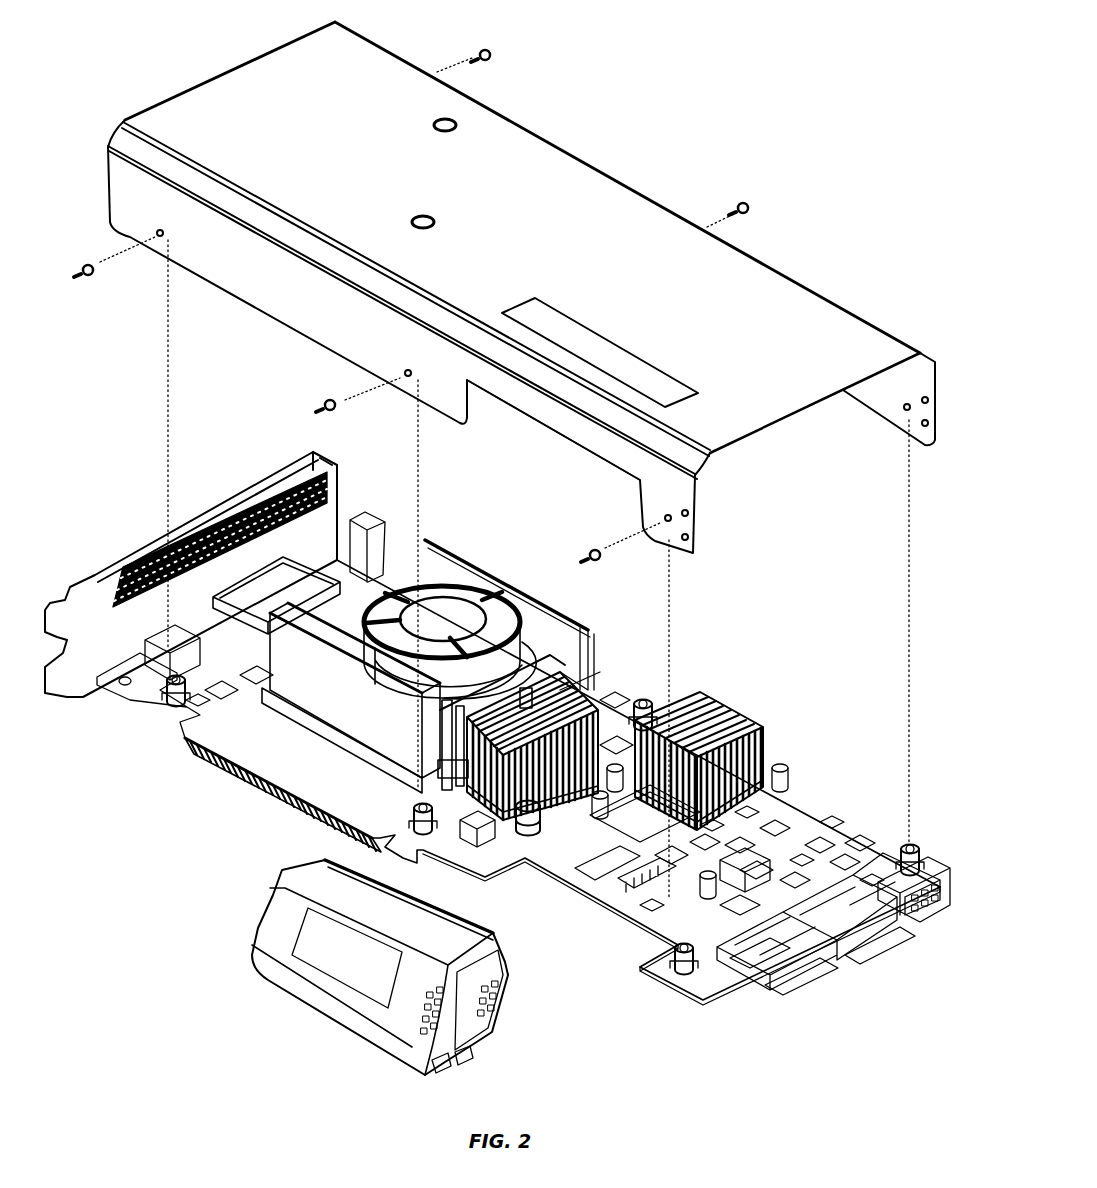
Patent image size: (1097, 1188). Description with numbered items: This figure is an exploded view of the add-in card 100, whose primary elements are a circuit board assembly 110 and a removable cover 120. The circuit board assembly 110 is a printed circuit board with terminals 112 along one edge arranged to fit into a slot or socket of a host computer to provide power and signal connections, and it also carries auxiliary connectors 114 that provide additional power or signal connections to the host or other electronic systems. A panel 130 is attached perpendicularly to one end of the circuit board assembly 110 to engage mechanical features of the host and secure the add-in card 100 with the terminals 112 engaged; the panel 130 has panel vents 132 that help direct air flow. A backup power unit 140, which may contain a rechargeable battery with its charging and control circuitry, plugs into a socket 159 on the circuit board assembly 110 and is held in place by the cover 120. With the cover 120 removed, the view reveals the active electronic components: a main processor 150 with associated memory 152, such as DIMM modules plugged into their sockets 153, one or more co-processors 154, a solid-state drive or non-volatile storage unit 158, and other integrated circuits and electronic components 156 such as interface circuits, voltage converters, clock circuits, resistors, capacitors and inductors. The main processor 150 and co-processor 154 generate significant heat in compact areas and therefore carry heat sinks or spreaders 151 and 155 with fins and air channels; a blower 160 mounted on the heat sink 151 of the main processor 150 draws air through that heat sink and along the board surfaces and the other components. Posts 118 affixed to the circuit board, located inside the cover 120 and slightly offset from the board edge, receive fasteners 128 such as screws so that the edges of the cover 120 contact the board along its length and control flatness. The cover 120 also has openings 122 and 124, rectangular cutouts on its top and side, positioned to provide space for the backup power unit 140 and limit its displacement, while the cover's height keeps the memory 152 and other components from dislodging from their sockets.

The add-in card 100 is at (755, 47).
The circuit board assembly 110 is at (682, 932).
The terminals 112 is at (270, 790).
The auxiliary connectors 114 is at (822, 972).
The posts 118 is at (152, 690).
The cover 120 is at (557, 259).
The opening 122 is at (606, 344).
The opening 124 is at (544, 452).
The fasteners 128 is at (492, 58).
The panel 130 is at (230, 574).
The panel vents 132 is at (338, 503).
The backup power unit 140 is at (327, 970).
The main processor 150 is at (508, 665).
The heat sink 151 is at (533, 652).
The memory 152 is at (320, 702).
The sockets 153 is at (343, 735).
The co-processor 154 is at (615, 812).
The heat sink 155 is at (603, 718).
The electronic components 156 is at (182, 639).
The non-volatile storage unit 158 is at (636, 836).
The socket 159 is at (624, 904).
The blower 160 is at (424, 629).